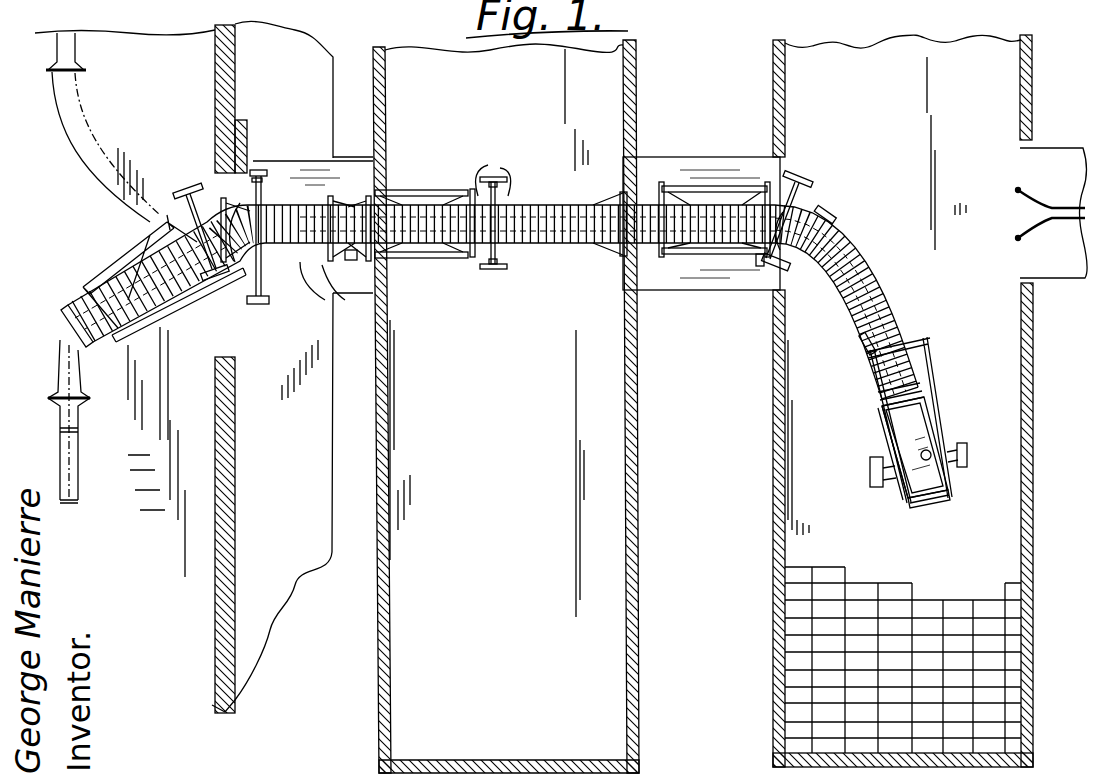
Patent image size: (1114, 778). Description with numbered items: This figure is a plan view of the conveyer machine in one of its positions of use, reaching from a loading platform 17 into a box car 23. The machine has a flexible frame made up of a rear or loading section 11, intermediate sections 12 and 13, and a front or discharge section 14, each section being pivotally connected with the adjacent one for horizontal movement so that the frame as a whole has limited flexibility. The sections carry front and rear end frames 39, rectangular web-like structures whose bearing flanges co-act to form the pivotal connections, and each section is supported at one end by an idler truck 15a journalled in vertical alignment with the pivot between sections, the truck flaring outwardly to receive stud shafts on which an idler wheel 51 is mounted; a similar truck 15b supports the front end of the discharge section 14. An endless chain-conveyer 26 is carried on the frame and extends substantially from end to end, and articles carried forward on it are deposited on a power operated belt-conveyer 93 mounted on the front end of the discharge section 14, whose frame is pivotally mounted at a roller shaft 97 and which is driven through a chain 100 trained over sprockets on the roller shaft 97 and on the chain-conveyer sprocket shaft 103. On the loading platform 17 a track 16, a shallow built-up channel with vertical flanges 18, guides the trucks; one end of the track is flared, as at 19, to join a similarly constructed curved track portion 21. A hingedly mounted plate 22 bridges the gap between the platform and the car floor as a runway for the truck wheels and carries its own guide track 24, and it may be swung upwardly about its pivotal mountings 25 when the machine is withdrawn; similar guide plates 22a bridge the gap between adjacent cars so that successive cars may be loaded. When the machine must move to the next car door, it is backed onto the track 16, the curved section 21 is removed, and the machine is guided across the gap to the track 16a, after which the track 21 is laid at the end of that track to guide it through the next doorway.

The rear or loading section 11 is at (98, 268).
The intermediate section 12 is at (832, 222).
The intermediate section 13 is at (692, 189).
The front or discharge section 14 is at (944, 422).
The idler truck 15a is at (198, 194).
The idler truck 15b is at (966, 468).
The track 16 is at (72, 489).
The track 16a is at (85, 47).
The loading platform 17 is at (272, 592).
The vertical flanges 18 is at (82, 424).
The flared end 19 is at (48, 400).
The track portion 21 is at (88, 134).
The hingedly mounted plate 22 is at (288, 160).
The guide plate 22a is at (694, 292).
The box car 23 is at (703, 404).
The guide track 24 is at (1058, 207).
The pivotal mountings 25 is at (258, 168).
The endless chain-conveyer 26 is at (560, 210).
The end frame 39 is at (52, 292).
The idler wheel 51 is at (759, 268).
The belt-conveyer 93 is at (928, 505).
The roller shaft 97 is at (884, 418).
The chain 100 is at (930, 390).
The chain-conveyer sprocket shaft 103 is at (924, 376).